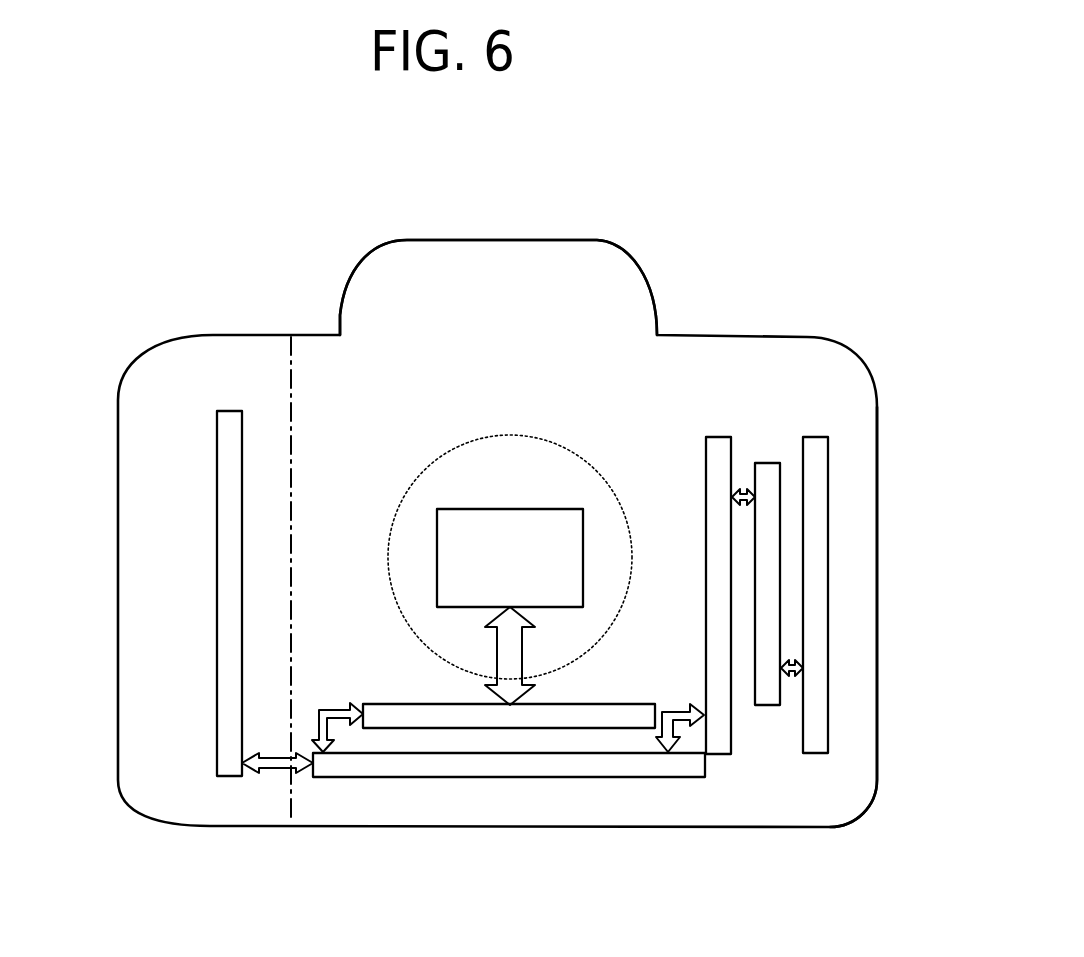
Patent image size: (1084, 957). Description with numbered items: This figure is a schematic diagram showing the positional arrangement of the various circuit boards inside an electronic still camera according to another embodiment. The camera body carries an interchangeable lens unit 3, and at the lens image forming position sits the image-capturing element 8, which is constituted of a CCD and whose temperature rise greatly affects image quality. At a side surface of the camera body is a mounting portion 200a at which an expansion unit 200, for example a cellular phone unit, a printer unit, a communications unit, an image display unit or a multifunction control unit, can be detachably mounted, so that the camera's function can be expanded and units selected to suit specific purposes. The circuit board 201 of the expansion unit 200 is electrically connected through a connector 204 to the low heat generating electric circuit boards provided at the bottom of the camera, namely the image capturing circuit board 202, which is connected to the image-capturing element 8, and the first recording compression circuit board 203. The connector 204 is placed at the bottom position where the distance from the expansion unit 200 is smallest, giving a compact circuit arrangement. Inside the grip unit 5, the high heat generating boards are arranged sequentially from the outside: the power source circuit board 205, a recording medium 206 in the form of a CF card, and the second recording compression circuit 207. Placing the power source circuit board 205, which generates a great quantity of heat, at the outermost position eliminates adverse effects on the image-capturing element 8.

The expansion unit 200 is at (220, 355).
The mounting portion 200a is at (327, 377).
The circuit board 201 is at (213, 450).
The image capturing circuit board 202 is at (462, 713).
The first recording compression circuit board 203 is at (383, 764).
The connector 204 is at (348, 713).
The power source circuit board 205 is at (812, 450).
The recording medium 206 is at (775, 467).
The second recording compression circuit 207 is at (708, 528).
The interchangeable lens unit 3 is at (417, 480).
The grip unit 5 is at (845, 403).
The image-capturing element 8 is at (541, 580).